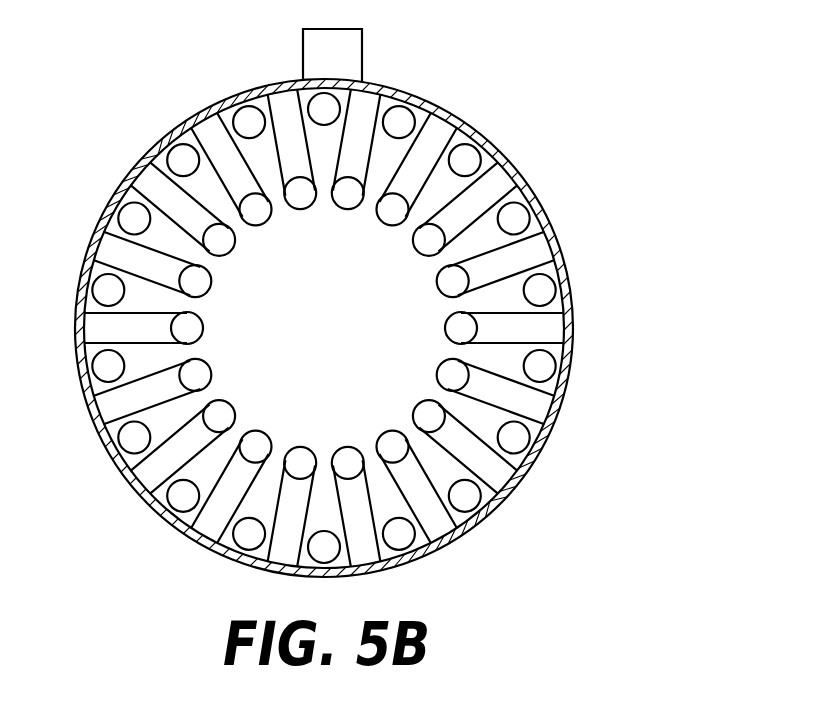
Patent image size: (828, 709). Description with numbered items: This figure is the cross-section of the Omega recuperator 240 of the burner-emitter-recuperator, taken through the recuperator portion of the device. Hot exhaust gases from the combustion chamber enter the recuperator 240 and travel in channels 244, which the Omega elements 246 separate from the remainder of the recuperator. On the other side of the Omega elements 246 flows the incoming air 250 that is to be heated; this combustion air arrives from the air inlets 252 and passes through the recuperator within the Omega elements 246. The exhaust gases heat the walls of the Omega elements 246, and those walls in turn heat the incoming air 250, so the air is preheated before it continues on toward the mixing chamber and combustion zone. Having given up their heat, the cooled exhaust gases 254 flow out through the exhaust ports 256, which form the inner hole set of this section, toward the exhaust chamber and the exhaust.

The Omega recuperator 240 is at (425, 88).
The channels 244 is at (364, 553).
The Omega elements 246 is at (548, 303).
The incoming air 250 is at (467, 160).
The air inlets 252 is at (517, 222).
The cooled exhaust gases 254 is at (432, 413).
The exhaust ports 256 is at (433, 413).